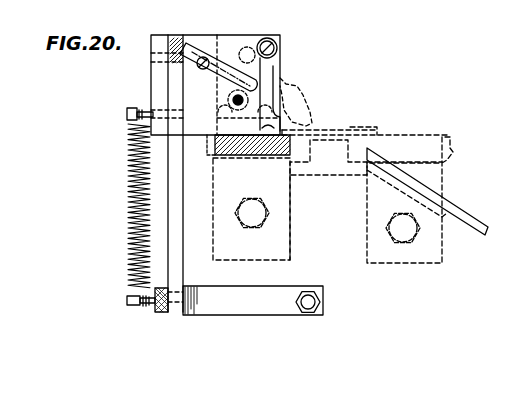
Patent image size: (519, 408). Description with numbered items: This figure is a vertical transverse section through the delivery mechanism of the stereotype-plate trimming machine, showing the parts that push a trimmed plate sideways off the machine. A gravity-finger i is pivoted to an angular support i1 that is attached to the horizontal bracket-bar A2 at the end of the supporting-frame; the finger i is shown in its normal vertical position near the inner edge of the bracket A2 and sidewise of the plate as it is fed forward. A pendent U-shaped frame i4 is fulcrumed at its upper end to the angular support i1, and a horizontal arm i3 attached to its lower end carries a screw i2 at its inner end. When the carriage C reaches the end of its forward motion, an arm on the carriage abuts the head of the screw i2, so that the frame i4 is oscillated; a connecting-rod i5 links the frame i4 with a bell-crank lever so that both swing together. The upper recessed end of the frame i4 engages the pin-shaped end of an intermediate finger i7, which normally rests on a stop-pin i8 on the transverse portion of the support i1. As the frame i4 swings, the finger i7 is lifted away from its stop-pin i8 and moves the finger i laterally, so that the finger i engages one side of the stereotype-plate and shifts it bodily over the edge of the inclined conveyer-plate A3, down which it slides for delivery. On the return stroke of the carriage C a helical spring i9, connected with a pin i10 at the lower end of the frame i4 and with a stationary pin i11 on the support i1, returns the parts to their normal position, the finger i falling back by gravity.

The angular support i1 is at (223, 44).
The gravity-finger i is at (267, 95).
The intermediate finger i7 is at (224, 84).
The pendent U-shaped frame i4 is at (180, 226).
The stop-pin i8 is at (237, 104).
The stationary pin i11 is at (126, 116).
The helical spring i9 is at (130, 222).
The pin i10 is at (127, 300).
The connecting-rod i5 is at (165, 314).
The horizontal arm i3 is at (270, 310).
The screw i2 is at (320, 303).
The horizontal bracket-bar A2 is at (251, 209).
The carriage C is at (366, 195).
The delivery-plate A3 is at (437, 187).